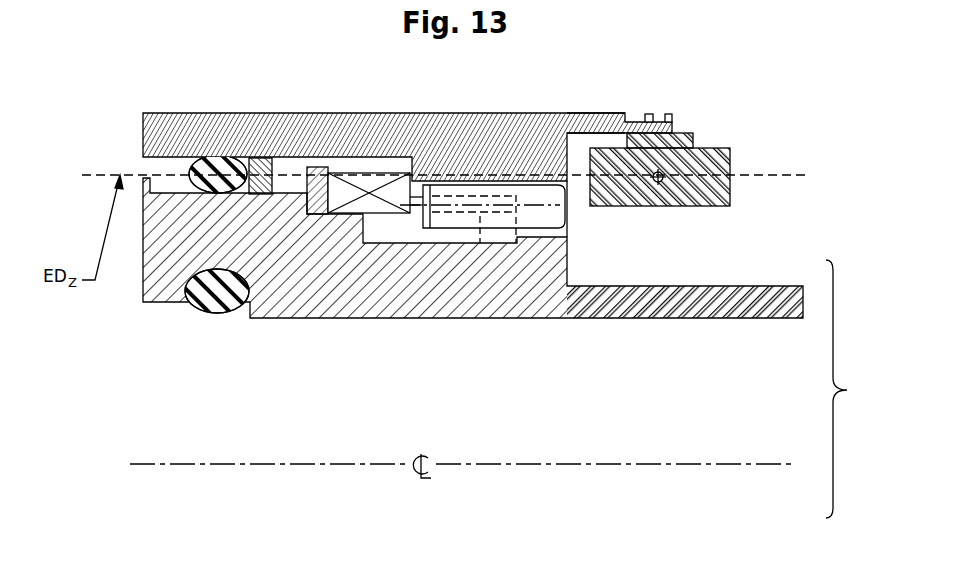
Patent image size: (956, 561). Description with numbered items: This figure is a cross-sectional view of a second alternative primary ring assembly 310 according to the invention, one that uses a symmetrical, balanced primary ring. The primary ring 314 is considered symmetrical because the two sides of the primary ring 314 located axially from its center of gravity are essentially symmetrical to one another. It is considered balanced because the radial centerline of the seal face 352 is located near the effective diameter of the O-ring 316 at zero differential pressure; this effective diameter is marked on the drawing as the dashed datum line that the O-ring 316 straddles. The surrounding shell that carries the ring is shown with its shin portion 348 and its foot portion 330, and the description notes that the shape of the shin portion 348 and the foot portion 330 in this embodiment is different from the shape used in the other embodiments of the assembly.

The primary ring assembly 310 is at (462, 90).
The primary ring 314 is at (722, 148).
The O-ring 316 is at (226, 157).
The foot portion 330 is at (603, 113).
The shin portion 348 is at (663, 127).
The seal face 352 is at (730, 165).